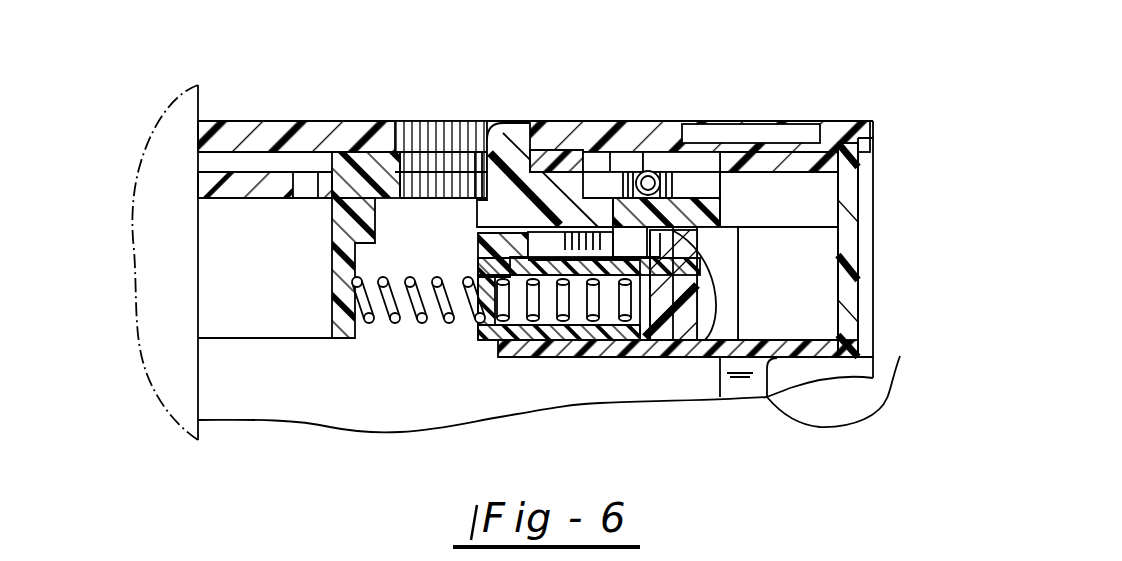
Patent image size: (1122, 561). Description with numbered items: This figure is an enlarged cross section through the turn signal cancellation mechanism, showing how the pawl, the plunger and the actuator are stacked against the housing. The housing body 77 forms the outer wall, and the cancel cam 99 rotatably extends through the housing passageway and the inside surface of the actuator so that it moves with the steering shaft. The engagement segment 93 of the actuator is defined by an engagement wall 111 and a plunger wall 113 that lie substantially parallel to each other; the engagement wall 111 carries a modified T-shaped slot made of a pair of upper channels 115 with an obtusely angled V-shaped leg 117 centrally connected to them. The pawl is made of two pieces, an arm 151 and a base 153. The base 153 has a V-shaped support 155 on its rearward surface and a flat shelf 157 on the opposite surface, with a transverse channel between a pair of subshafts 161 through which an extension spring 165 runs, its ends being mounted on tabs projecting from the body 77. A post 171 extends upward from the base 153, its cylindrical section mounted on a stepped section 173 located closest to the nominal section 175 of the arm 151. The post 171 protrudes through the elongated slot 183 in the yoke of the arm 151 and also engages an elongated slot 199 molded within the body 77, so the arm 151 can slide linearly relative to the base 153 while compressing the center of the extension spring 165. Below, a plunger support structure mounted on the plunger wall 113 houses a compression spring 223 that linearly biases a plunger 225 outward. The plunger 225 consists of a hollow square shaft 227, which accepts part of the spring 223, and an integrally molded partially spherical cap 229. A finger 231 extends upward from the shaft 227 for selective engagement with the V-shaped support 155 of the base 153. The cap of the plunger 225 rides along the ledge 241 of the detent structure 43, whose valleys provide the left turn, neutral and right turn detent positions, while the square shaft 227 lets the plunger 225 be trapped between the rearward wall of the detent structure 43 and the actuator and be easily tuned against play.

The detent structure 43 is at (843, 236).
The body portion 77 is at (640, 172).
The engagement segment 93 is at (674, 255).
The cancel cam 99 is at (235, 187).
The engagement wall 111 is at (542, 150).
The plunger wall 113 is at (340, 283).
The upper channels 115 is at (440, 163).
The V-shaped leg 117 is at (472, 163).
The arm 151 is at (353, 124).
The base 153 is at (703, 208).
The V-shaped support 155 is at (580, 250).
The flat shelf 157 is at (628, 150).
The subshafts 161 is at (757, 150).
The extension spring 165 is at (728, 150).
The post 171 is at (505, 135).
The stepped section 173 is at (593, 165).
The nominal section 175 is at (460, 170).
The elongated slot 183 is at (447, 200).
The elongated slot 199 is at (427, 124).
The compression spring 223 is at (393, 320).
The plunger 225 is at (625, 330).
The square shaft 227 is at (510, 332).
The partially spherical cap 229 is at (850, 377).
The finger 231 is at (483, 253).
The ledge 241 is at (697, 255).